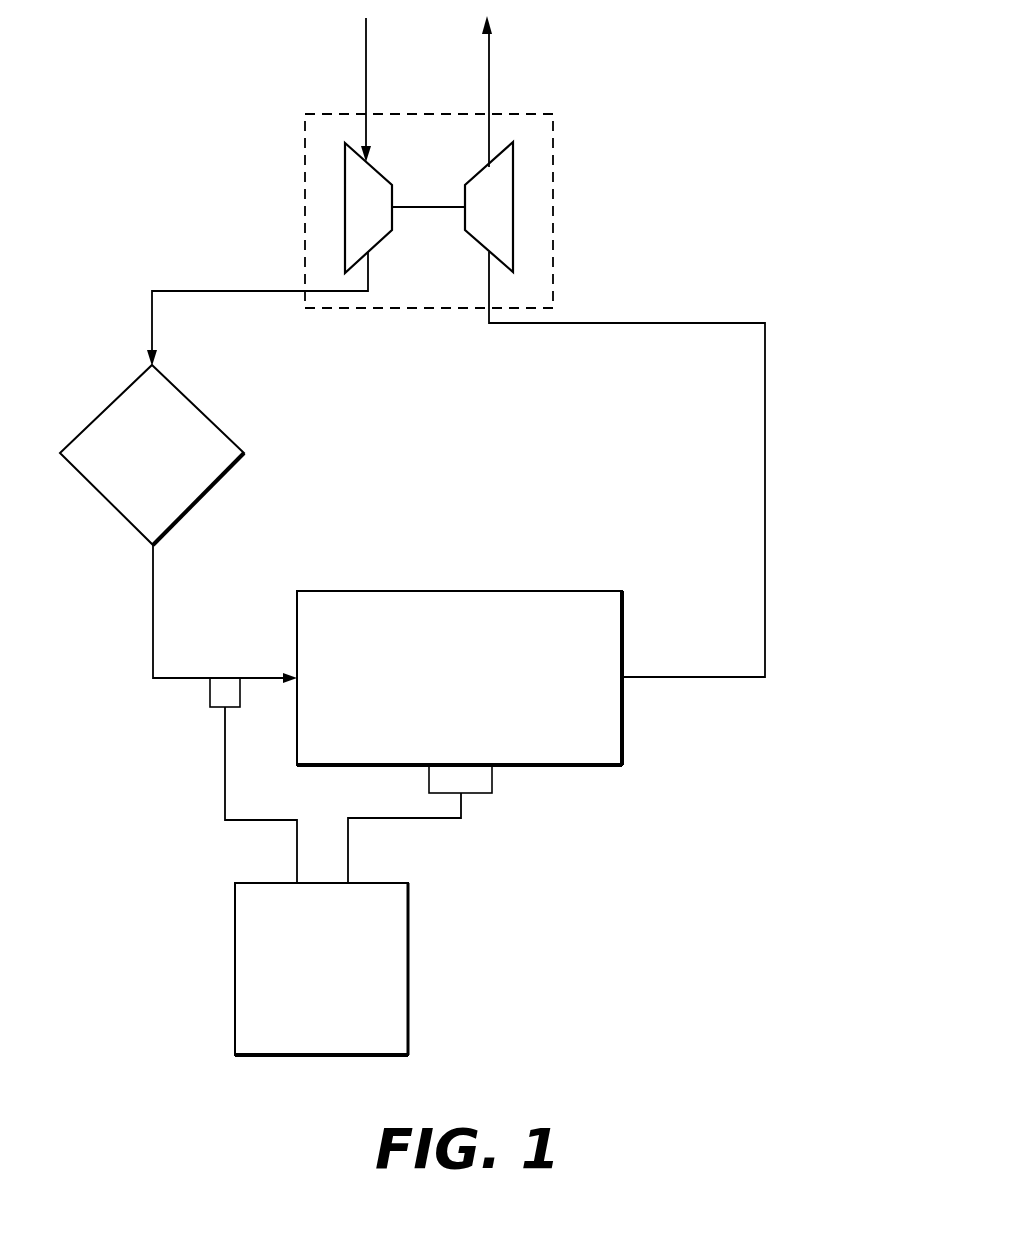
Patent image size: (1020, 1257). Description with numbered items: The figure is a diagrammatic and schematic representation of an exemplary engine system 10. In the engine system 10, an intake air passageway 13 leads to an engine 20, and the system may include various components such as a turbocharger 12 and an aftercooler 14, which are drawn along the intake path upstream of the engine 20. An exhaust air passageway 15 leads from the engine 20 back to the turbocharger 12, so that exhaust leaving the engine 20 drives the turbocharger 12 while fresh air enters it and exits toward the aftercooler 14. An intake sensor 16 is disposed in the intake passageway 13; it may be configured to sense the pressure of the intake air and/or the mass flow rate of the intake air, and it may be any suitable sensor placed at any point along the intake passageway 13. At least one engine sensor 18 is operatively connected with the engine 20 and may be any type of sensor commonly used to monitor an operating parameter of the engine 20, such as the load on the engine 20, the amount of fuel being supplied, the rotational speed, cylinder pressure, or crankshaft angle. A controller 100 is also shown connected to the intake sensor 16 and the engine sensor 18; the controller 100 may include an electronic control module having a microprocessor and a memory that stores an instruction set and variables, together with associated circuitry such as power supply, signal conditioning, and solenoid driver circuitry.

The engine system 10 is at (791, 165).
The turbocharger 12 is at (553, 195).
The intake air passageway 13 is at (283, 291).
The aftercooler 14 is at (213, 416).
The exhaust air passageway 15 is at (658, 323).
The intake sensor 16 is at (213, 707).
The engine sensor 18 is at (493, 787).
The engine 20 is at (459, 678).
The controller 100 is at (343, 881).